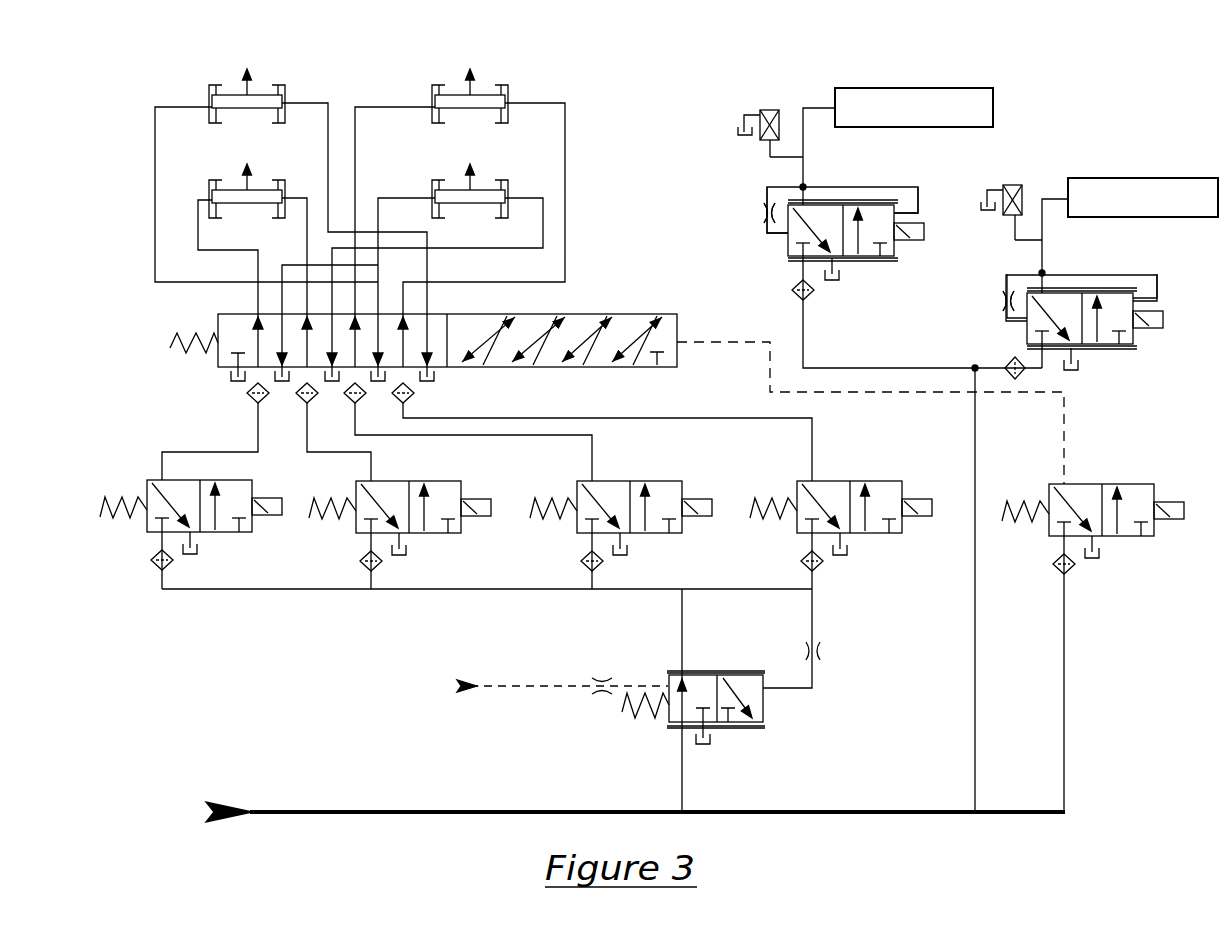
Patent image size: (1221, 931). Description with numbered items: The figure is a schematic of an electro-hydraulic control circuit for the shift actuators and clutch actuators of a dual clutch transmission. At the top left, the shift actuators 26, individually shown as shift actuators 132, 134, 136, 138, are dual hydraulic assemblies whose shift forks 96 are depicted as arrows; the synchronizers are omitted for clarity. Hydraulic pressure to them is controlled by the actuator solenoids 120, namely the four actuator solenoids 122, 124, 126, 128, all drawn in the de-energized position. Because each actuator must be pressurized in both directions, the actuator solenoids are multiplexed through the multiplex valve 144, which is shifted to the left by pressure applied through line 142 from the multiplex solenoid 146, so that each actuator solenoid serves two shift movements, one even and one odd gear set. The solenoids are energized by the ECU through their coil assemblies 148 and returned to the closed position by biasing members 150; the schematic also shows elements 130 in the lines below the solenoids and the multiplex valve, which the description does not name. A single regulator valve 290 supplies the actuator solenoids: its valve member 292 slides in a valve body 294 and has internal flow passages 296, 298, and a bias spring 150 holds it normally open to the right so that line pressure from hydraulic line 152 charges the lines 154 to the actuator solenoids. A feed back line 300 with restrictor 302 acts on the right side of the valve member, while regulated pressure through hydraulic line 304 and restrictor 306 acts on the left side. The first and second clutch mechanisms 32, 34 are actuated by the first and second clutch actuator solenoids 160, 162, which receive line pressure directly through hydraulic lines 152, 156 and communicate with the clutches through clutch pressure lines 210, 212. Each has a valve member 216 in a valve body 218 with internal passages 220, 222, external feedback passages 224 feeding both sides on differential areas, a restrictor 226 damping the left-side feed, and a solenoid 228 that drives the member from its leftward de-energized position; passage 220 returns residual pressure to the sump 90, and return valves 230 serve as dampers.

The shift actuators 26 is at (572, 104).
The first clutch mechanism 32 is at (1125, 168).
The second clutch mechanism 34 is at (855, 78).
The sump 90 is at (440, 378).
The shift forks 96 is at (240, 90).
The actuator solenoids 120 is at (145, 468).
The actuator solenoid 122 is at (243, 534).
The actuator solenoid 124 is at (452, 535).
The actuator solenoid 126 is at (675, 535).
The actuator solenoid 128 is at (895, 535).
The filter 130 is at (410, 398).
The shift actuator 132 is at (260, 186).
The shift actuator 134 is at (462, 186).
The shift actuator 136 is at (260, 90).
The shift actuator 138 is at (462, 90).
The line 142 is at (693, 340).
The multiplex valve 144 is at (580, 313).
The multiplex solenoid 146 is at (1120, 484).
The coil assemblies 148 is at (258, 517).
The biasing members 150 is at (177, 356).
The hydraulic line 152 is at (900, 815).
The lines 154 is at (160, 588).
The hydraulic line 156 is at (975, 440).
The first clutch actuator solenoid 160 is at (1108, 355).
The second clutch actuator solenoid 162 is at (858, 265).
The clutch pressure line 210 is at (806, 165).
The clutch pressure line 212 is at (1045, 257).
The valve member 216 is at (918, 217).
The valve body 218 is at (887, 200).
The internal hydraulic flow passage 220 is at (817, 223).
The internal hydraulic flow passage 222 is at (860, 223).
The external hydraulic feedback passages 224 is at (767, 193).
The restrictor 226 is at (762, 210).
The solenoid 228 is at (900, 243).
The return valves 230 is at (757, 110).
The regulator valve 290 is at (667, 742).
The valve member 292 is at (668, 680).
The valve body 294 is at (710, 672).
The internal flow passage 296 is at (685, 697).
The internal flow passage 298 is at (750, 682).
The feed back line 300 is at (818, 625).
The restrictor 302 is at (825, 650).
The hydraulic line 304 is at (540, 692).
The restrictor 306 is at (593, 678).